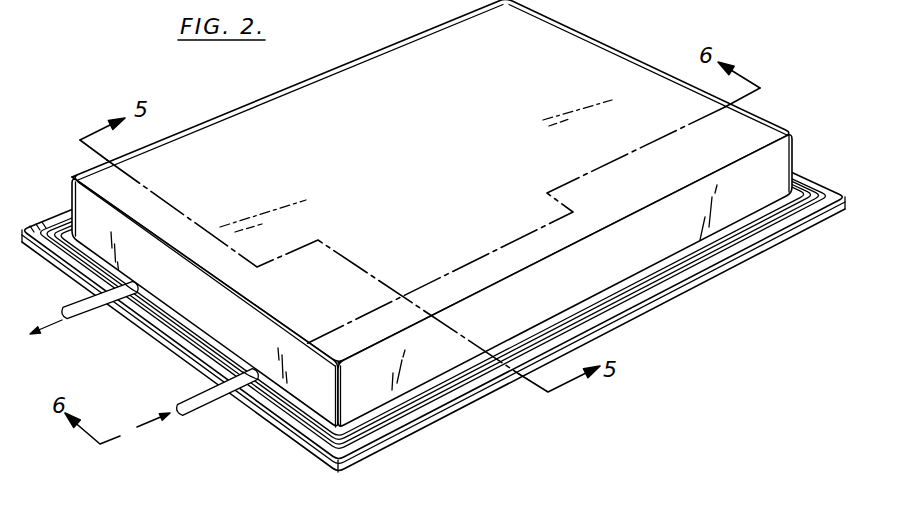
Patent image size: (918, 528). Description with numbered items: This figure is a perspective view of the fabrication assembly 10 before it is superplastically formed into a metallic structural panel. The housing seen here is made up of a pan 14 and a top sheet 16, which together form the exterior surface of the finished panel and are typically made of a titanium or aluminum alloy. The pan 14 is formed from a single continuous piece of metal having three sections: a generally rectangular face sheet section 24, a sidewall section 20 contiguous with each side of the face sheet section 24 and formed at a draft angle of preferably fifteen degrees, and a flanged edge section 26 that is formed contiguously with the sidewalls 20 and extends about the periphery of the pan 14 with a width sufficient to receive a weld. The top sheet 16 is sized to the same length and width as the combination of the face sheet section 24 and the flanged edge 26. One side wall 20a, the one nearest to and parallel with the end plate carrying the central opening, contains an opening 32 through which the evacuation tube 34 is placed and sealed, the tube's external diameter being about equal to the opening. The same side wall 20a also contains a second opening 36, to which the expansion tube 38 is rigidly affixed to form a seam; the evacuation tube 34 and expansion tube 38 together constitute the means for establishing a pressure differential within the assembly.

The fabrication assembly 10 is at (433, 337).
The pan 14 is at (432, 232).
The top sheet 16 is at (344, 471).
The sidewall section 20 is at (418, 377).
The side wall 20a is at (297, 391).
The face sheet section 24 is at (586, 43).
The flanged edge section 26 is at (322, 430).
The opening 32 is at (221, 376).
The evacuation tube 34 is at (195, 411).
The second opening 36 is at (102, 303).
The expansion tube 38 is at (65, 313).